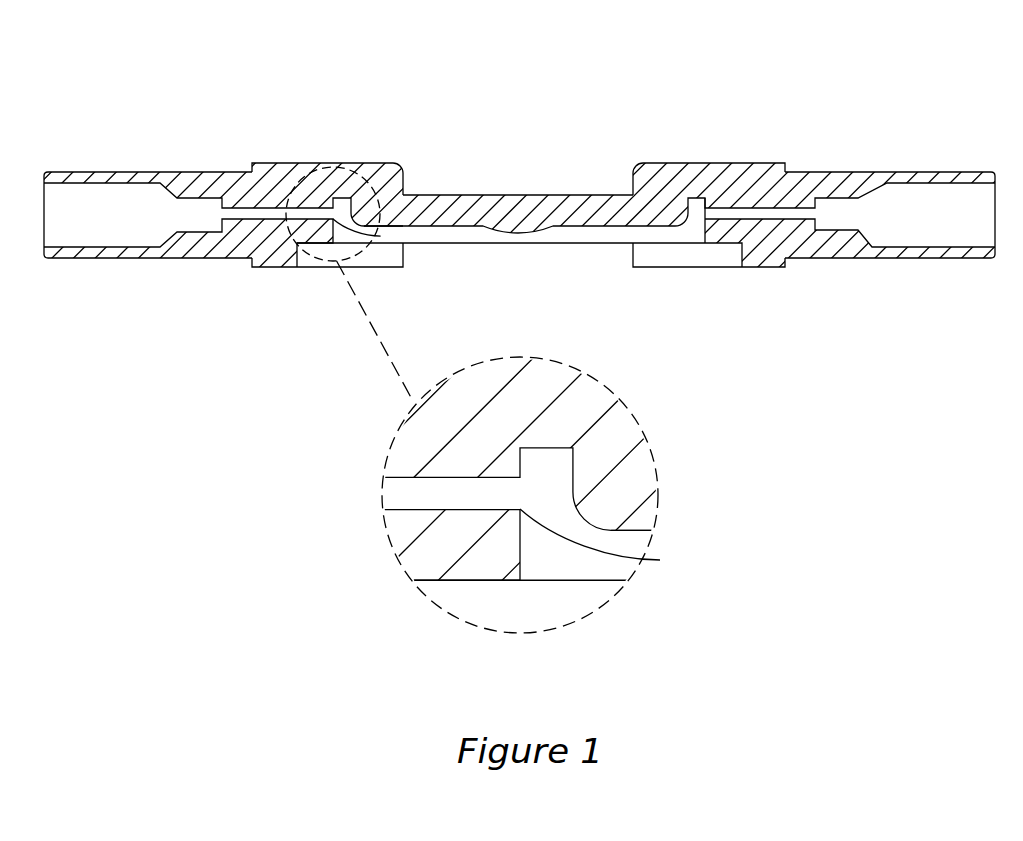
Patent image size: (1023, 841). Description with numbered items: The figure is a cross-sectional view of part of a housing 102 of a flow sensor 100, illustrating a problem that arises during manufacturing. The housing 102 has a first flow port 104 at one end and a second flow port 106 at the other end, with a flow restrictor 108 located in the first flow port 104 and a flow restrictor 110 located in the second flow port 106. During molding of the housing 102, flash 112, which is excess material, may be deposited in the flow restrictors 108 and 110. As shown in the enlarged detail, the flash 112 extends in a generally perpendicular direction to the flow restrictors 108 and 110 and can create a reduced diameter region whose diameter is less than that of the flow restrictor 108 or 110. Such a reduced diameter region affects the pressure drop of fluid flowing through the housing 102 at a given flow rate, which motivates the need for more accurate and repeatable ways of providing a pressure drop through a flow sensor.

The flow sensor 100 is at (545, 73).
The housing 102 is at (511, 201).
The first flow port 104 is at (98, 195).
The second flow port 106 is at (928, 200).
The flow restrictor 108 is at (243, 215).
The flow restrictor 110 is at (750, 213).
The flash 112 is at (660, 560).